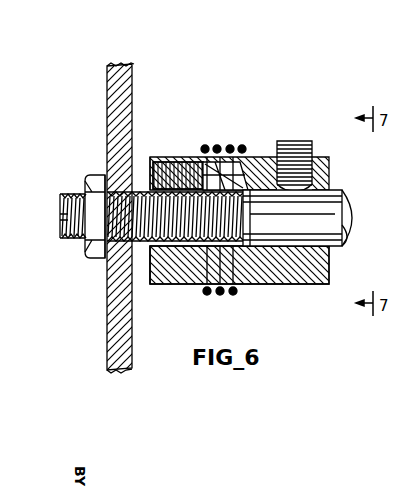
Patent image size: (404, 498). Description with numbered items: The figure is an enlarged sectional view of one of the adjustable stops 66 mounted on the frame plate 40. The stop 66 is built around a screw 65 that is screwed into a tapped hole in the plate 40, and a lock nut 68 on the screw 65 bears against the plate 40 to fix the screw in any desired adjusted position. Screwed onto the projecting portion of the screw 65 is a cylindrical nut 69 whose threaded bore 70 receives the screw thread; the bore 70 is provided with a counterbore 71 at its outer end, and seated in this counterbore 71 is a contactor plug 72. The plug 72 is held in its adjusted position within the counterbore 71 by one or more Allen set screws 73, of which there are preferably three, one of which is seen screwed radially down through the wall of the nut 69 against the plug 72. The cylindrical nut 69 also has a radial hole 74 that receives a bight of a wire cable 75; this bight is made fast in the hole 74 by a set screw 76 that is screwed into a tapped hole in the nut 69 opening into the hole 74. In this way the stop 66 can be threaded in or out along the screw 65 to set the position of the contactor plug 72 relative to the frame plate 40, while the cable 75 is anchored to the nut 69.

The frame plate 40 is at (112, 316).
The screw 65 is at (74, 188).
The adjustable stop 66 is at (313, 284).
The lock nut 68 is at (90, 256).
The cylindrical nut 69 is at (282, 270).
The threaded bore 70 is at (148, 198).
The counterbore 71 is at (345, 232).
The contactor plug 72 is at (340, 191).
The Allen set screw 73 is at (296, 142).
The radial hole 74 is at (232, 178).
The wire cable 75 is at (213, 148).
The set screw 76 is at (172, 172).